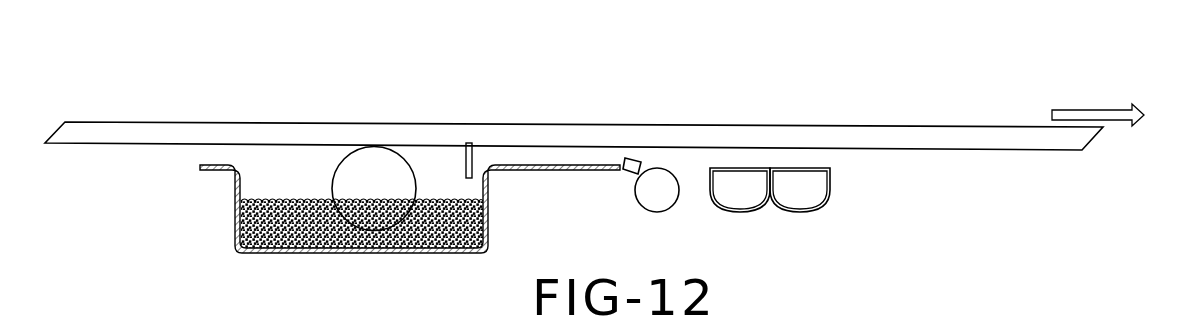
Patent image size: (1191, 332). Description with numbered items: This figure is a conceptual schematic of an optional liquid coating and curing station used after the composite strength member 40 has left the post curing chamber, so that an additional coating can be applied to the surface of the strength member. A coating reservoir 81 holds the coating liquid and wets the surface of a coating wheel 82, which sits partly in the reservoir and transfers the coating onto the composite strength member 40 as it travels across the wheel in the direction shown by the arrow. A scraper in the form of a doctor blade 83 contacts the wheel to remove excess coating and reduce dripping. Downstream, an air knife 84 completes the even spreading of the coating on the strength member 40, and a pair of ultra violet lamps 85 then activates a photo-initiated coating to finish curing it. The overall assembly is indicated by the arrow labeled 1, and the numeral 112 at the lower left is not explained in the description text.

The coating apparatus 1 is at (252, 90).
The substrate plate 40 is at (966, 140).
The coating liquid tank 81 is at (237, 218).
The applicator roller 82 is at (377, 165).
The doctor blade 83 is at (463, 167).
The blower nozzle 84 is at (657, 198).
The heaters 85 is at (737, 197).
The reference element 112 is at (46, 330).